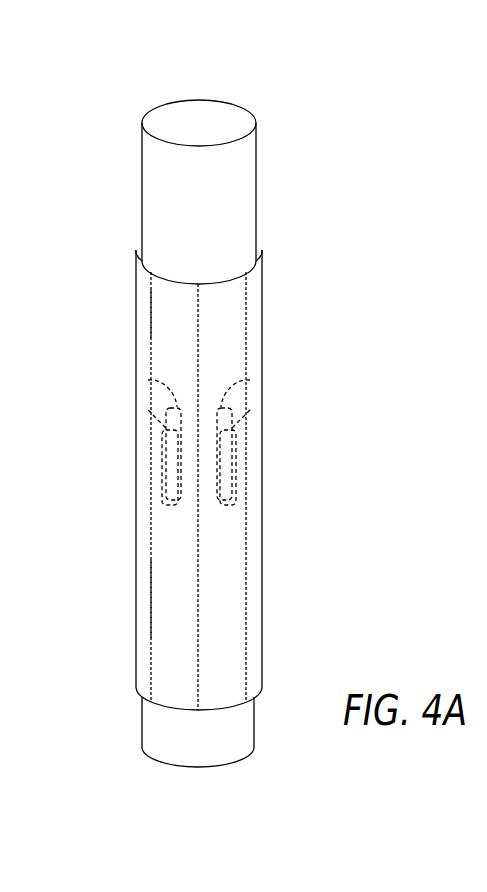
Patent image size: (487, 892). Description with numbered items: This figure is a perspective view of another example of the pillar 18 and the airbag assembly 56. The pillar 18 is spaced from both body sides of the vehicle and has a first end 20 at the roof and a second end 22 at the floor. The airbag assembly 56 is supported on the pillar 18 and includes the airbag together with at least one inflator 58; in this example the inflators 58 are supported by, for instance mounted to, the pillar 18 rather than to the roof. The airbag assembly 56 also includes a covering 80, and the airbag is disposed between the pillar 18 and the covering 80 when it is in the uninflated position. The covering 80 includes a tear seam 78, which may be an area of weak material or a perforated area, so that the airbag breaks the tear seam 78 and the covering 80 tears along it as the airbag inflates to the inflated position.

The pillar 18 is at (257, 193).
The first end 20 is at (232, 117).
The second end 22 is at (155, 760).
The airbag assembly 56 is at (273, 312).
The inflator 58 is at (162, 460).
The tear seam 78 is at (150, 597).
The covering 80 is at (167, 327).